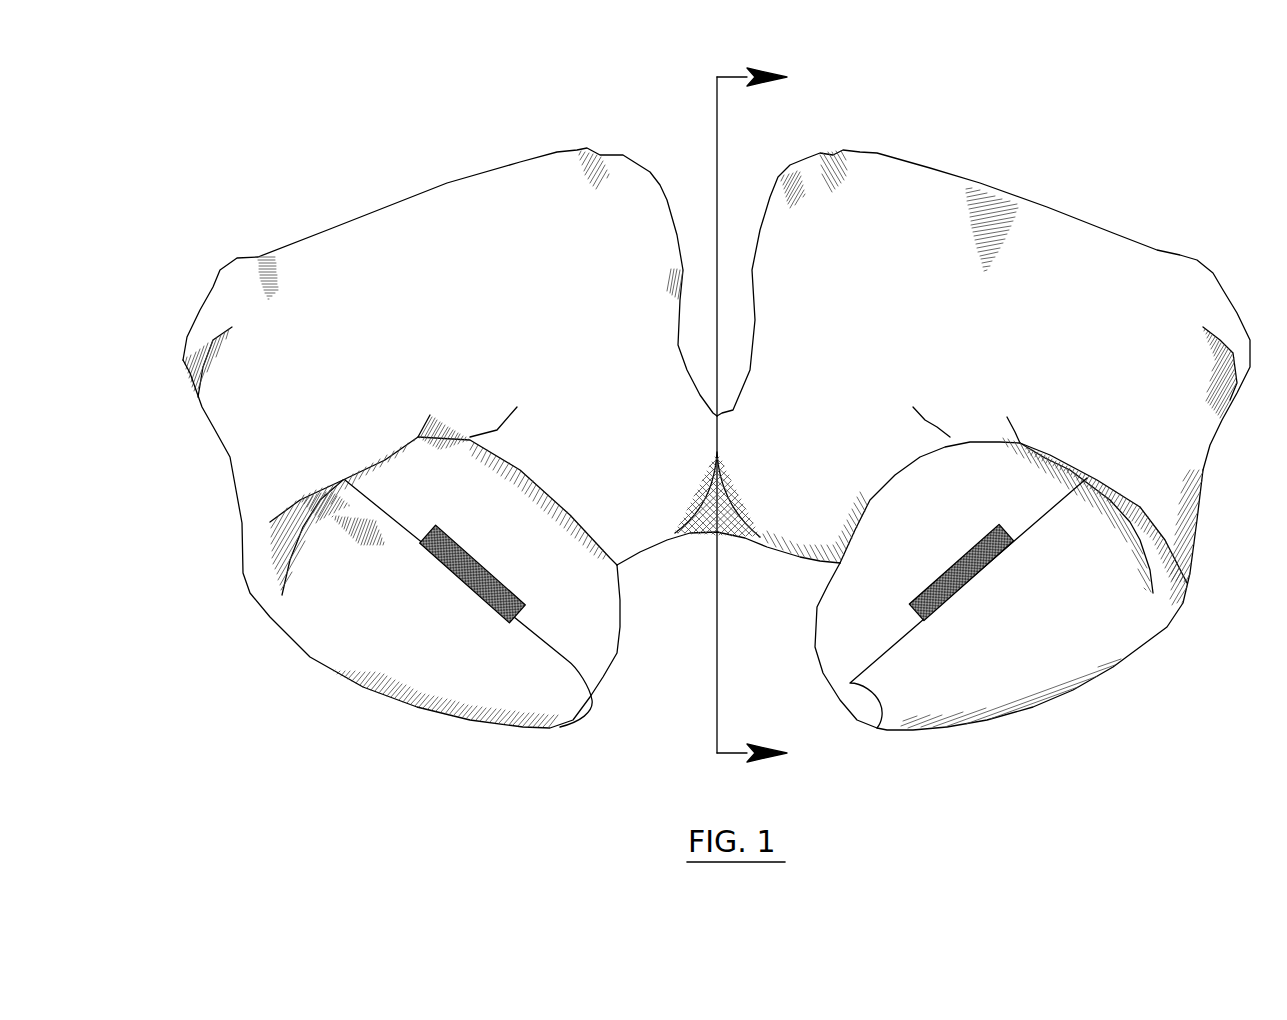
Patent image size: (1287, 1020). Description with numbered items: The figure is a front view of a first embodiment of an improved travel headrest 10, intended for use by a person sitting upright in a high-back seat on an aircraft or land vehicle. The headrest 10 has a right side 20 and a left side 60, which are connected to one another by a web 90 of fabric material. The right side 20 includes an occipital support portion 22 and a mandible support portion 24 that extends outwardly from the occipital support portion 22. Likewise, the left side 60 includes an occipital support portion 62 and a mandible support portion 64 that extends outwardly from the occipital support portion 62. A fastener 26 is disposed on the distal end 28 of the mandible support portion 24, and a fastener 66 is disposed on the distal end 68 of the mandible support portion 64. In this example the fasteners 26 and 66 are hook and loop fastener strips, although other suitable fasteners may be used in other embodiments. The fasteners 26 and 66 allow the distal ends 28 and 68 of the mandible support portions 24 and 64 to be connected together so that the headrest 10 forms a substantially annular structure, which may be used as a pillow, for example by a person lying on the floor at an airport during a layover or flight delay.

The travel headrest 10 is at (148, 166).
The right side 20 is at (335, 225).
The occipital support portion 22 is at (497, 247).
The mandible support portion 24 is at (360, 633).
The fastener 26 is at (500, 607).
The distal end 28 is at (560, 727).
The left side 60 is at (1158, 247).
The occipital support portion 62 is at (932, 227).
The mandible support portion 64 is at (1067, 597).
The fastener 66 is at (940, 593).
The distal end 68 is at (877, 728).
The web 90 is at (702, 522).